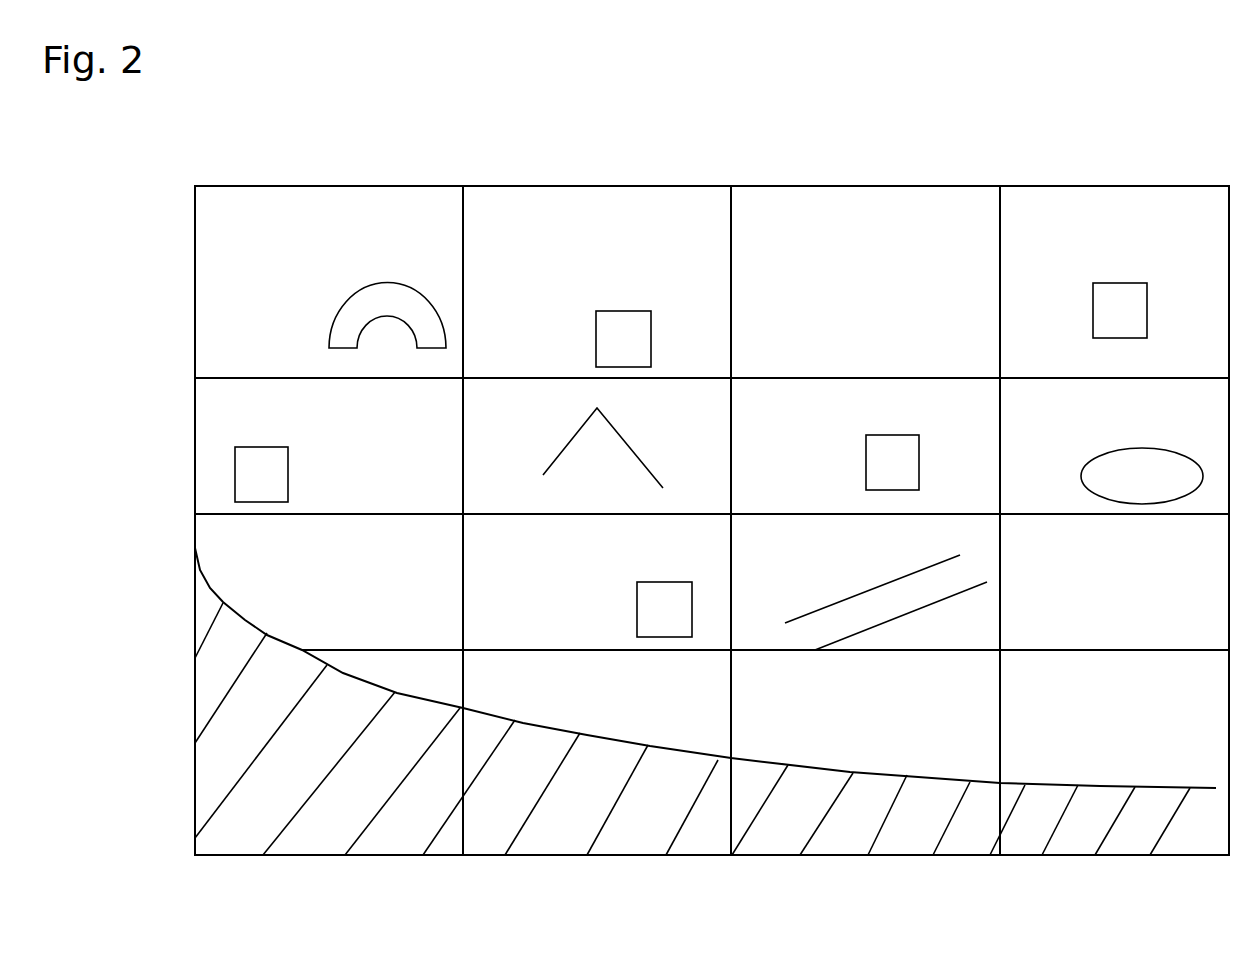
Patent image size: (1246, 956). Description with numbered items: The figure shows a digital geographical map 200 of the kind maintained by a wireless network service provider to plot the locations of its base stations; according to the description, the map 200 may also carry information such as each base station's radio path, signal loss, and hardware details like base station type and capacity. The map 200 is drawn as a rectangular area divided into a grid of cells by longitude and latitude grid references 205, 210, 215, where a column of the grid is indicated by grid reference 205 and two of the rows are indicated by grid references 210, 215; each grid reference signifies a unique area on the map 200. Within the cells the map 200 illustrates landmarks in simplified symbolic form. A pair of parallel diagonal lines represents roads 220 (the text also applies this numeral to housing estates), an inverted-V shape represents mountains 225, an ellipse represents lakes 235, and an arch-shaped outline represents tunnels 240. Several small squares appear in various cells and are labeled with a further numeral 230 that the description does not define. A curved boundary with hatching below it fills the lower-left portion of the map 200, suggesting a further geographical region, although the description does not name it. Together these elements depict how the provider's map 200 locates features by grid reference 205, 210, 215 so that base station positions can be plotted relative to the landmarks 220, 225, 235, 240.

The digital geographical map 200 is at (395, 186).
The grid reference 205 is at (995, 176).
The grid reference 210 is at (168, 378).
The grid reference 215 is at (168, 518).
The roads 220 is at (878, 585).
The mountains 225 is at (572, 437).
The square feature 230 is at (596, 323).
The lakes 235 is at (1110, 452).
The tunnels 240 is at (370, 283).